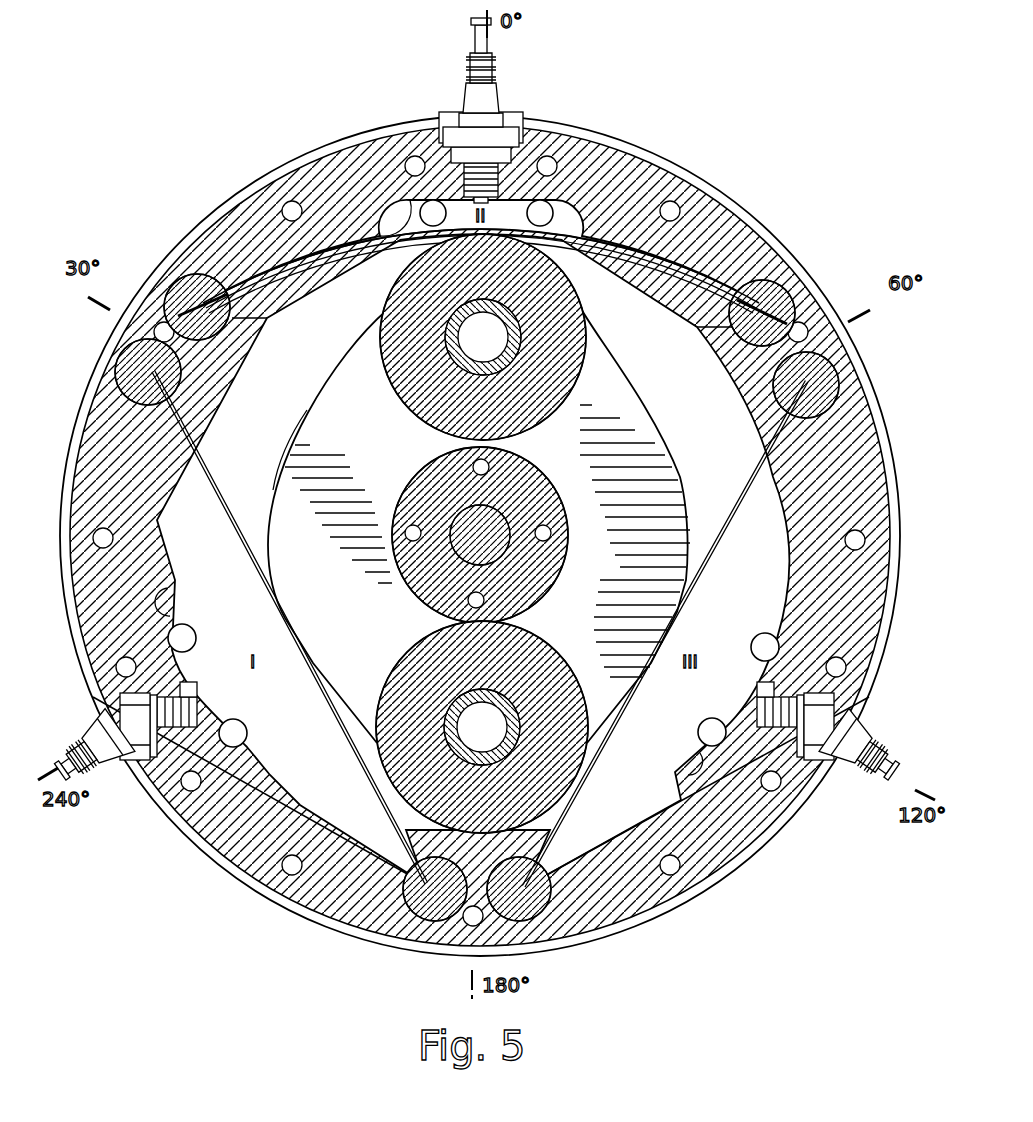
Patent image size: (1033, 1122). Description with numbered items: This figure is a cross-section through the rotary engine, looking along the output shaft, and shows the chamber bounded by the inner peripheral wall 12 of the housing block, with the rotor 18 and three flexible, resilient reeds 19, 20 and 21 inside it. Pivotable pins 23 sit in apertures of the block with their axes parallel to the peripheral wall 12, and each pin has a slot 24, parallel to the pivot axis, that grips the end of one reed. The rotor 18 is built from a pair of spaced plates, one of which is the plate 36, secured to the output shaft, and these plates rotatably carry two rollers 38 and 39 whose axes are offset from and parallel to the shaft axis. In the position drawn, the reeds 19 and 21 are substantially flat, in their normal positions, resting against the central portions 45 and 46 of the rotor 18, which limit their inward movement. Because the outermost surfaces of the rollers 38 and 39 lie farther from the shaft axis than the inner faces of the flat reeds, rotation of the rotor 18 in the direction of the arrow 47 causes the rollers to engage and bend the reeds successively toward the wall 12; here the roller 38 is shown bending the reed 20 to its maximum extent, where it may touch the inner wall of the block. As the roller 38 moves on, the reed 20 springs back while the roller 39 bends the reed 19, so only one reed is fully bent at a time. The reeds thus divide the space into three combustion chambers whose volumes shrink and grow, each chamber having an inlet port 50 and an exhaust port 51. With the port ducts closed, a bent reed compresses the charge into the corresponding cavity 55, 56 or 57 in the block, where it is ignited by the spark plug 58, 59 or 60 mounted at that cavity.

The inner peripheral wall 12 is at (678, 772).
The rotor 18 is at (700, 468).
The reed 19 is at (250, 520).
The reed 20 is at (650, 262).
The reed 21 is at (733, 518).
The pin 23 is at (212, 285).
The slot 24 is at (178, 316).
The plate 36 is at (318, 403).
The roller 38 is at (565, 288).
The roller 39 is at (545, 660).
The central portion 45 is at (292, 600).
The central portion 46 is at (610, 588).
The arrow 47 is at (667, 343).
The inlet port 50 is at (545, 226).
The outlet port 51 is at (425, 226).
The cavity 55 is at (160, 600).
The cavity 56 is at (400, 205).
The cavity 57 is at (694, 780).
The spark plug 58 is at (832, 770).
The spark plug 59 is at (118, 768).
The spark plug 60 is at (497, 102).